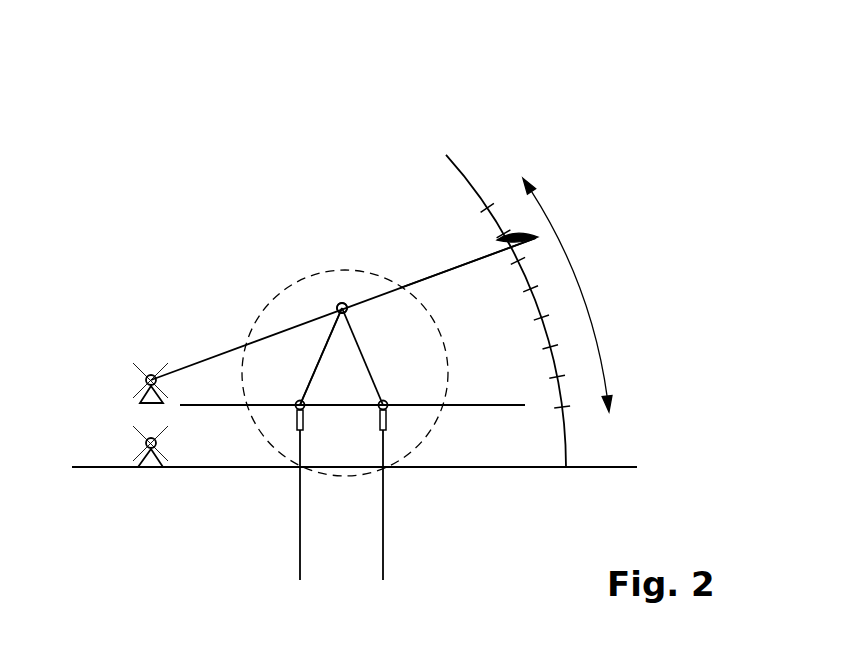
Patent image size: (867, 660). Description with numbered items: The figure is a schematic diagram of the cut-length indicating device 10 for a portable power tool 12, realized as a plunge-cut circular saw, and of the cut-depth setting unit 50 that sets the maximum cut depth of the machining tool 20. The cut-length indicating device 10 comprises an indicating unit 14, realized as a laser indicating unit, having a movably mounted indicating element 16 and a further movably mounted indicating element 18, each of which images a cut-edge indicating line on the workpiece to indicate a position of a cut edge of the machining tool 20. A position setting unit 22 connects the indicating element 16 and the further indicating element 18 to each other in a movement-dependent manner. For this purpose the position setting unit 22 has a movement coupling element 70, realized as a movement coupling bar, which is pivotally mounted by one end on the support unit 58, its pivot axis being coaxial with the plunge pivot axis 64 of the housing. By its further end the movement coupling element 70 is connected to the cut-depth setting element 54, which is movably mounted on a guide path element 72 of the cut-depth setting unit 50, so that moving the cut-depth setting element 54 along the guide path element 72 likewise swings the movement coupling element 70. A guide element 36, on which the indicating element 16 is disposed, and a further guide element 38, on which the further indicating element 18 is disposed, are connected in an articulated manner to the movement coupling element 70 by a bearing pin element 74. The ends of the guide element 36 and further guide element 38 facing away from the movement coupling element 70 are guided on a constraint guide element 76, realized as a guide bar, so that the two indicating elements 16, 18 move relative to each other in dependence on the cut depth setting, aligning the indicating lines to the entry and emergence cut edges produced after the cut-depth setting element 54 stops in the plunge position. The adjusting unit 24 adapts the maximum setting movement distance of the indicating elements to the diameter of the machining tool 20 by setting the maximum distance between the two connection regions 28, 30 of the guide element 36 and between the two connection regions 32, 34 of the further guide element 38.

The cut-length indicating device 10 is at (178, 257).
The portable power tool 12 is at (647, 75).
The indicating unit 14 is at (473, 482).
The indicating element 16 is at (298, 421).
The further indicating element 18 is at (387, 421).
The machining tool 20 is at (312, 271).
The position setting unit 22 is at (107, 383).
The adjusting unit 24 is at (236, 333).
The connection region 28 is at (333, 330).
The connection region 30 is at (303, 413).
The connection region 32 is at (348, 309).
The connection region 34 is at (380, 413).
The guide element 36 is at (322, 348).
The further guide element 38 is at (374, 377).
The cut-depth setting unit 50 is at (530, 152).
The cut-depth setting element 54 is at (516, 233).
The support unit 58 is at (622, 462).
The plunge pivot axis 64 is at (148, 444).
The movement coupling element 70 is at (457, 265).
The guide path element 72 is at (449, 163).
The bearing pin element 74 is at (342, 303).
The constraint guide element 76 is at (502, 405).